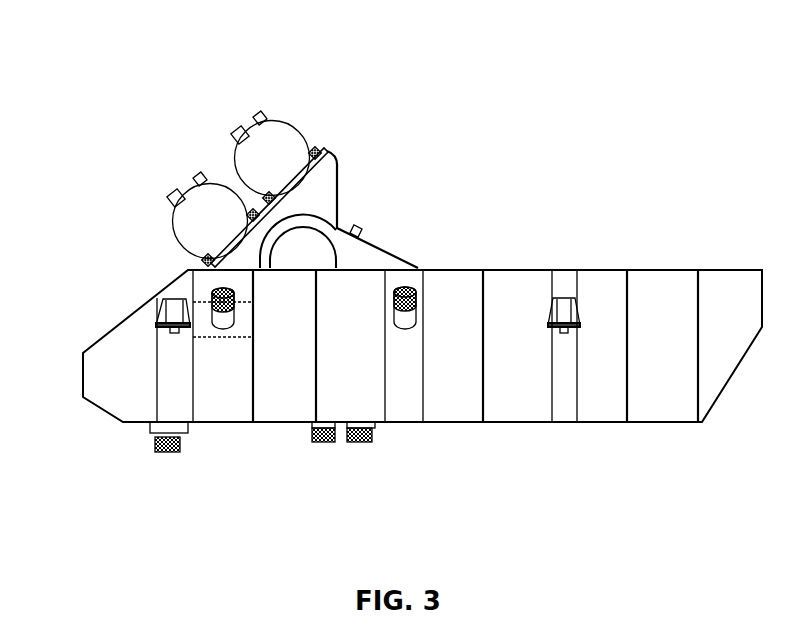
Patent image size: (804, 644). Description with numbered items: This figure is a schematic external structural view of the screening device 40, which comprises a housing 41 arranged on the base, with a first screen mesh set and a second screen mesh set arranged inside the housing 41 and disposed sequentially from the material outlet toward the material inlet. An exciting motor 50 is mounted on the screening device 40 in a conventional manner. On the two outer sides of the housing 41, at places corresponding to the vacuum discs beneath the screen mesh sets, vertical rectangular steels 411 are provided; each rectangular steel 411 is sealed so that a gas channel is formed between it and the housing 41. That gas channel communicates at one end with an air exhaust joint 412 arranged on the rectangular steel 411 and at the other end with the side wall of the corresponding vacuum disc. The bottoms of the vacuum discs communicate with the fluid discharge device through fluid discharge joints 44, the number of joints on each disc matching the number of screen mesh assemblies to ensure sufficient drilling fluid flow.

The screening device 40 is at (465, 58).
The housing 41 is at (522, 269).
The rectangular steel 411 is at (151, 372).
The air exhaust joint 412 is at (194, 284).
The fluid discharge joint 44 is at (164, 452).
The exciting motor 50 is at (177, 191).